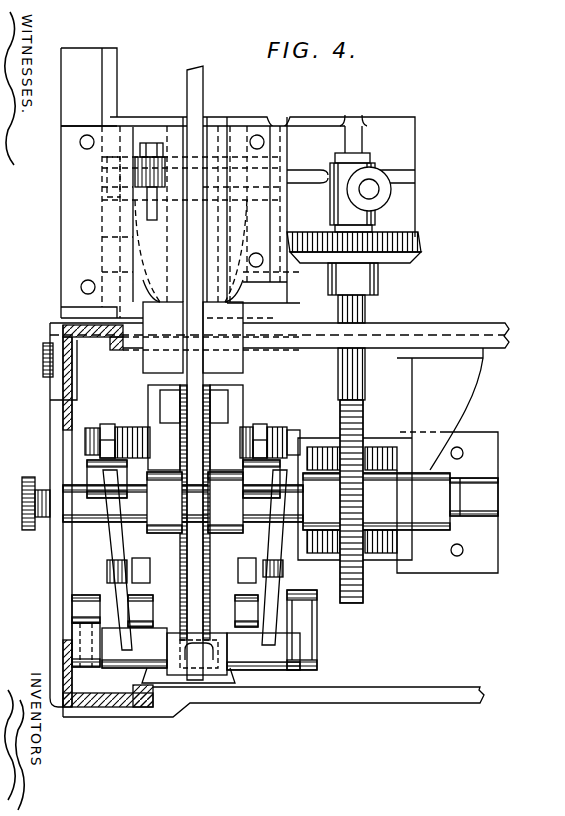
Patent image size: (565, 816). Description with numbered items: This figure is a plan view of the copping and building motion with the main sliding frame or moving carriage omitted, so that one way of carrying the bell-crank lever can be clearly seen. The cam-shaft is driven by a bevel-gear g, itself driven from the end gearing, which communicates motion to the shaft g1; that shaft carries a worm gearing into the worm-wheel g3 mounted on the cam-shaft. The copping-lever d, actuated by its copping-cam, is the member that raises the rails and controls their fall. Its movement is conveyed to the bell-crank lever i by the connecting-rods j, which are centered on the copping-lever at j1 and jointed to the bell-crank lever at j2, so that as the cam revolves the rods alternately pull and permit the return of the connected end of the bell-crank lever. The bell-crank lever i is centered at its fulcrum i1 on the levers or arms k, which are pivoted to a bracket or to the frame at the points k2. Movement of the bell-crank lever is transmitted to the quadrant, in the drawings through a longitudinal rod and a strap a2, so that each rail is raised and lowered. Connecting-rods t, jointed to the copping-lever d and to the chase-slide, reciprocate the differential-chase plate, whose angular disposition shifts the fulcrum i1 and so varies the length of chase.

The bevel-gear g is at (383, 223).
The shaft g1 is at (368, 312).
The worm-wheel g3 is at (370, 592).
The strap a2 is at (197, 415).
The copping-lever d is at (173, 447).
The connecting-rods j is at (108, 452).
The center of connecting-rods on copping-lever j1 is at (106, 448).
The joint of connecting-rods to bell-crank lever j2 is at (110, 478).
The bell-crank lever i is at (110, 545).
The center or fulcrum of bell-crank lever i1 is at (216, 658).
The connecting-rods t is at (148, 593).
The levers or arms k is at (92, 627).
The pivot points of arms k2 is at (68, 607).